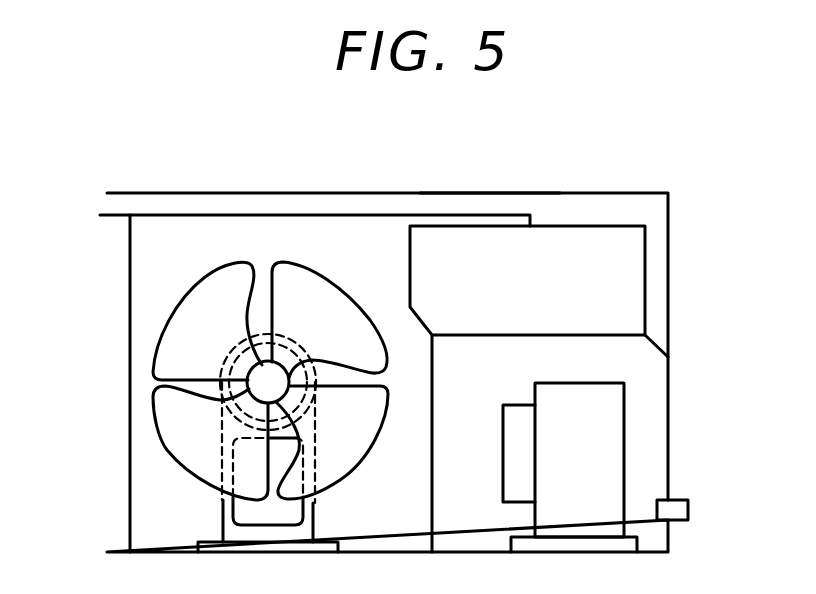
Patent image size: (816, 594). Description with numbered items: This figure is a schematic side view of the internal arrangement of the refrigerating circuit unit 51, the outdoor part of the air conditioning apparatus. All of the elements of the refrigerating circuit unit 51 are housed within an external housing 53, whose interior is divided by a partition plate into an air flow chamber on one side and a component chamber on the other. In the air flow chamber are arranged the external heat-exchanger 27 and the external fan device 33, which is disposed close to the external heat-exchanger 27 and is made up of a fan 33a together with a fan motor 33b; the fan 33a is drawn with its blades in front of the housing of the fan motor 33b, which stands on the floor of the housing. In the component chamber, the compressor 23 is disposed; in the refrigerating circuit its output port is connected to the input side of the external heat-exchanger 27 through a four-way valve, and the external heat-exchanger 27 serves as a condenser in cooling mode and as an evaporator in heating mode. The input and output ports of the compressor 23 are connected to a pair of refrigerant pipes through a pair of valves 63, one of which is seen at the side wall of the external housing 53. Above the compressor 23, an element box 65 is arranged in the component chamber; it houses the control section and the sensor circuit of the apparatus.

The compressor 23 is at (627, 418).
The external heat-exchanger 27 is at (300, 203).
The external fan device 33 is at (220, 520).
The fan 33a is at (237, 263).
The fan motor 33b is at (313, 506).
The refrigerating circuit unit 51 is at (467, 176).
The external housing 53 is at (652, 193).
The valves 63 is at (688, 503).
The element box 65 is at (585, 226).